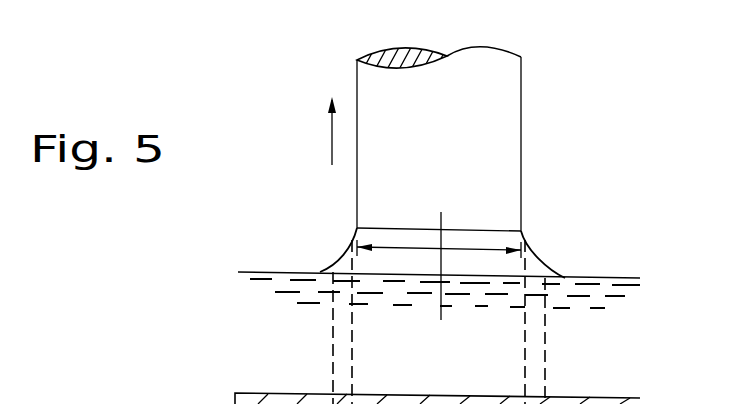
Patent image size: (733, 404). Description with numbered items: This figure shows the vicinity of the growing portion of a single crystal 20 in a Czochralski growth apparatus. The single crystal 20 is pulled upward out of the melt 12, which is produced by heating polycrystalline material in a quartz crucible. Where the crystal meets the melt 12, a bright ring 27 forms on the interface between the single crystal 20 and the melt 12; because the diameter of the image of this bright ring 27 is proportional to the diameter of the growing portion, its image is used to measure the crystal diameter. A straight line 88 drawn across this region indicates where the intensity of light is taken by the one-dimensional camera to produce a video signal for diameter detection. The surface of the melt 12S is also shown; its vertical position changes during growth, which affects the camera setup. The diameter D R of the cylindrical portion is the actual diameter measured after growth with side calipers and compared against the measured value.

The melt 12 is at (285, 282).
The surface of the melt 12S is at (597, 276).
The single crystal 20 is at (521, 153).
The bright ring 27 is at (543, 258).
The straight line 88 is at (443, 222).
The diameter of the cylindrical portion DR is at (397, 247).